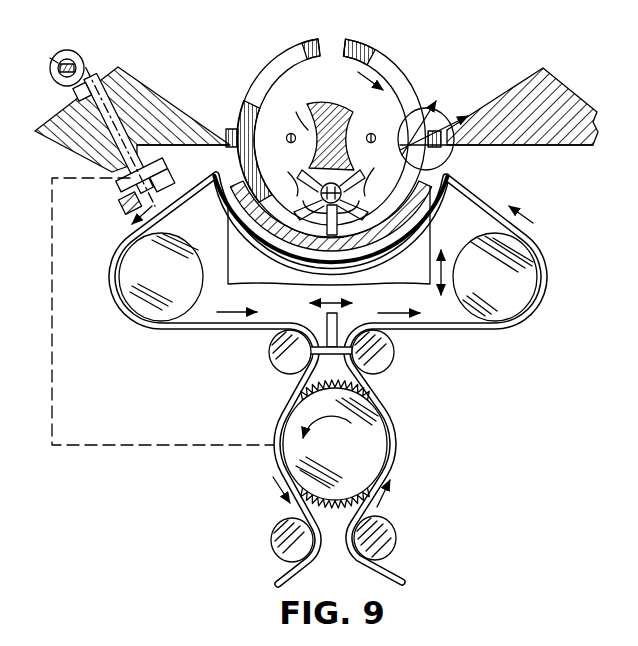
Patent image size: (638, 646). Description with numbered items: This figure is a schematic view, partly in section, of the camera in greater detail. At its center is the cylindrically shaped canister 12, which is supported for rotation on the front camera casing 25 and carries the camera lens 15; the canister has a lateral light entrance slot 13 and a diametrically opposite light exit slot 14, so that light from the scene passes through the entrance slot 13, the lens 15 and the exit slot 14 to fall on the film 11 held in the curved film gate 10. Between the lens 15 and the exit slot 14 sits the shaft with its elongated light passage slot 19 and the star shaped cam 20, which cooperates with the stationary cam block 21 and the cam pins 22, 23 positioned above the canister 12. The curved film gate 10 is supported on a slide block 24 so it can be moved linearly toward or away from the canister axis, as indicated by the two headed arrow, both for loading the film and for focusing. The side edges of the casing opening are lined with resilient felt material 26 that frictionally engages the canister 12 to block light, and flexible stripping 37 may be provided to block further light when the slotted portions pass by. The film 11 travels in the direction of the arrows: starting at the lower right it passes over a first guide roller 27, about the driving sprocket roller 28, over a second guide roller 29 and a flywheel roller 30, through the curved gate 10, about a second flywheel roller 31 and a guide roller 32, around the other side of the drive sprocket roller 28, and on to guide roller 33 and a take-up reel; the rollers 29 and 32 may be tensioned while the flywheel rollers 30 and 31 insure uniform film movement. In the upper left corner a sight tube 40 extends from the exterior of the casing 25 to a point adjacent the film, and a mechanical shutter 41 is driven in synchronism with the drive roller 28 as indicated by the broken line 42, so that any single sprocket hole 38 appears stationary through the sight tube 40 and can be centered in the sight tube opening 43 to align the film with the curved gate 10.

The curved film gate 10 is at (452, 217).
The film 11 is at (480, 197).
The canister 12 is at (396, 62).
The light entrance slot 13 is at (326, 48).
The light exit slot 14 is at (335, 234).
The camera lens 15 is at (306, 126).
The light passage slot 19 is at (303, 192).
The star shaped cam 20 is at (354, 196).
The stationary cam block 21 is at (318, 104).
The cam pin 22 is at (288, 136).
The cam pin 23 is at (372, 134).
The slide block 24 is at (418, 250).
The front camera casing 25 is at (150, 93).
The resilient felt material 26 is at (232, 129).
The first guide roller 27 is at (384, 530).
The driving sprocket roller 28 is at (372, 440).
The second guide roller 29 is at (386, 354).
The flywheel roller 30 is at (528, 280).
The second flywheel roller 31 is at (157, 292).
The guide roller 32 is at (276, 354).
The guide roller 33 is at (280, 540).
The flexible stripping 37 is at (216, 149).
The sprocket hole 38 is at (78, 60).
The sight tube 40 is at (140, 222).
The mechanical shutter 41 is at (118, 207).
The broken line 42 is at (192, 311).
The sight tube opening 43 is at (56, 62).